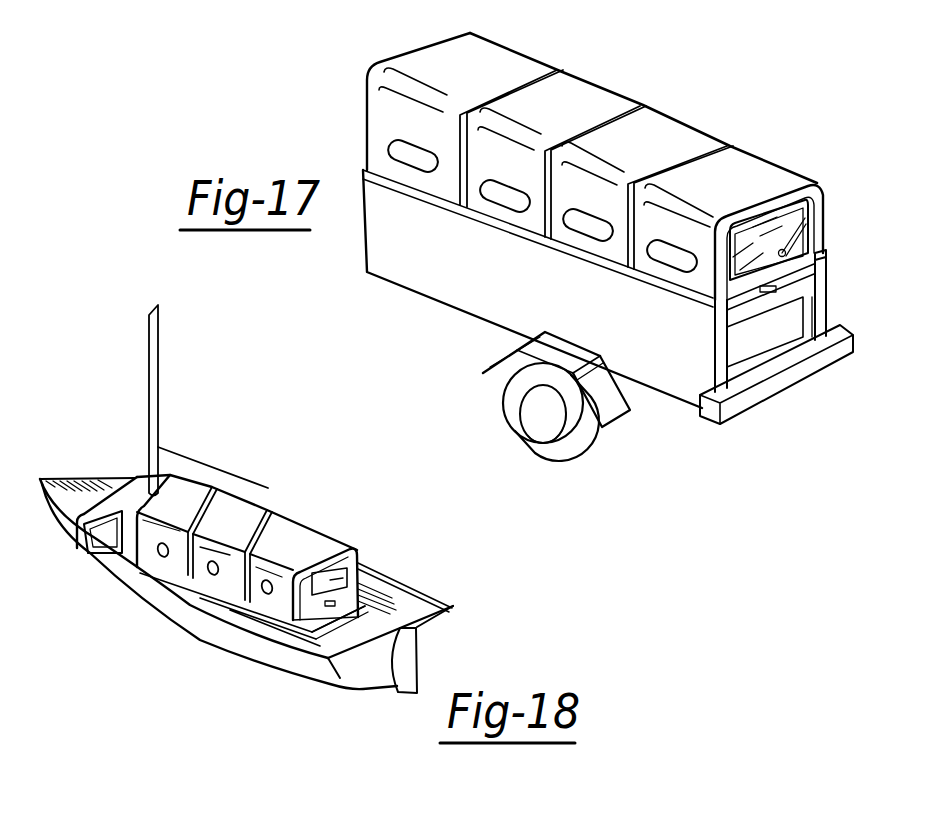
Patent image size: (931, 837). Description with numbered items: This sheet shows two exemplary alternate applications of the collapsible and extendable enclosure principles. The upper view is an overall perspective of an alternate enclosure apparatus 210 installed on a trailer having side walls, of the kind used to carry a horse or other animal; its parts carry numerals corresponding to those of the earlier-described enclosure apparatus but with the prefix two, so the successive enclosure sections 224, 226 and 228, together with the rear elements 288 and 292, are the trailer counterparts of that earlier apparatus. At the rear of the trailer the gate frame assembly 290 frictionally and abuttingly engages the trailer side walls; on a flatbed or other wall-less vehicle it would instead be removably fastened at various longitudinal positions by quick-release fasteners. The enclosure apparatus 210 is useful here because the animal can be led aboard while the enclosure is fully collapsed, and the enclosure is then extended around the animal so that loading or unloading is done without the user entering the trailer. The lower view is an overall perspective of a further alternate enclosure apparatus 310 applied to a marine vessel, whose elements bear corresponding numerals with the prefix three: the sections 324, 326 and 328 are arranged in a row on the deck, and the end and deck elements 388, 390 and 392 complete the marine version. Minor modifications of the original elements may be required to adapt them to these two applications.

In FIG. 17, the enclosure apparatus 210 is at (617, 80).
In FIG. 17, the storage module 224 is at (494, 52).
In FIG. 17, the storage module 226 is at (628, 40).
In FIG. 17, the rear storage module 228 is at (750, 172).
In FIG. 17, the rear window 288 is at (813, 223).
In FIG. 17, the gate frame assembly 290 is at (818, 290).
In FIG. 17, the lower rear panel 292 is at (773, 333).
In FIG. 18, the enclosure apparatus 310 is at (177, 570).
In FIG. 18, the storage module 324 is at (306, 448).
In FIG. 18, the storage module 326 is at (267, 527).
In FIG. 18, the storage module 328 is at (317, 550).
In FIG. 18, the access door 388 is at (343, 580).
In FIG. 18, the deck grating 390 is at (367, 595).
In FIG. 18, the mounting base 392 is at (325, 617).